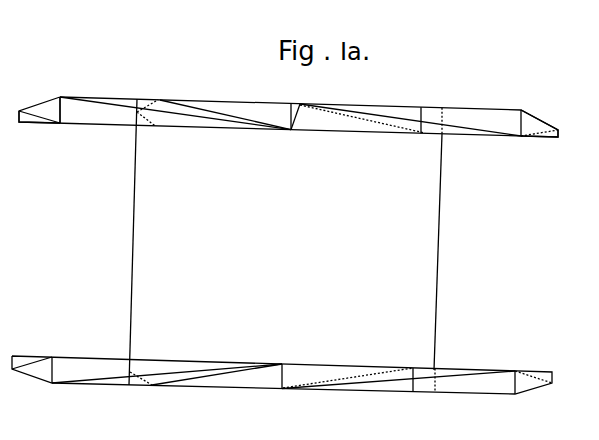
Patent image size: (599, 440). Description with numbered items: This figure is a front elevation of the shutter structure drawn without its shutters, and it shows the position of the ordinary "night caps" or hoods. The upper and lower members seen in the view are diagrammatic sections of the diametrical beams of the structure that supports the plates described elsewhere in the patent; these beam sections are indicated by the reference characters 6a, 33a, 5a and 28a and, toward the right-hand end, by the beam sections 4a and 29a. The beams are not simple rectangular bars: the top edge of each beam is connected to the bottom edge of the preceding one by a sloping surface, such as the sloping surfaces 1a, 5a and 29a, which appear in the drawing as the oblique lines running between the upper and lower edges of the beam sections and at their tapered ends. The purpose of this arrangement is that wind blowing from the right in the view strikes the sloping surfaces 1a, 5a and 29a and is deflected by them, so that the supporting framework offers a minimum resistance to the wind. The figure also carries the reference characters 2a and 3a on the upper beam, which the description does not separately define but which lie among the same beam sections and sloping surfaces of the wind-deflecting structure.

The diametrical beam 6a is at (65, 99).
The diametrical beam 33a is at (53, 131).
The diametrical beam with sloping surface 5a is at (295, 106).
The diametrical beam 28a is at (299, 130).
The diagonal strut 2a is at (361, 126).
The sloping surface 1a is at (429, 239).
The post 3a is at (430, 109).
The diametrical beam 4a is at (528, 111).
The diametrical beam with sloping surface 29a is at (536, 135).